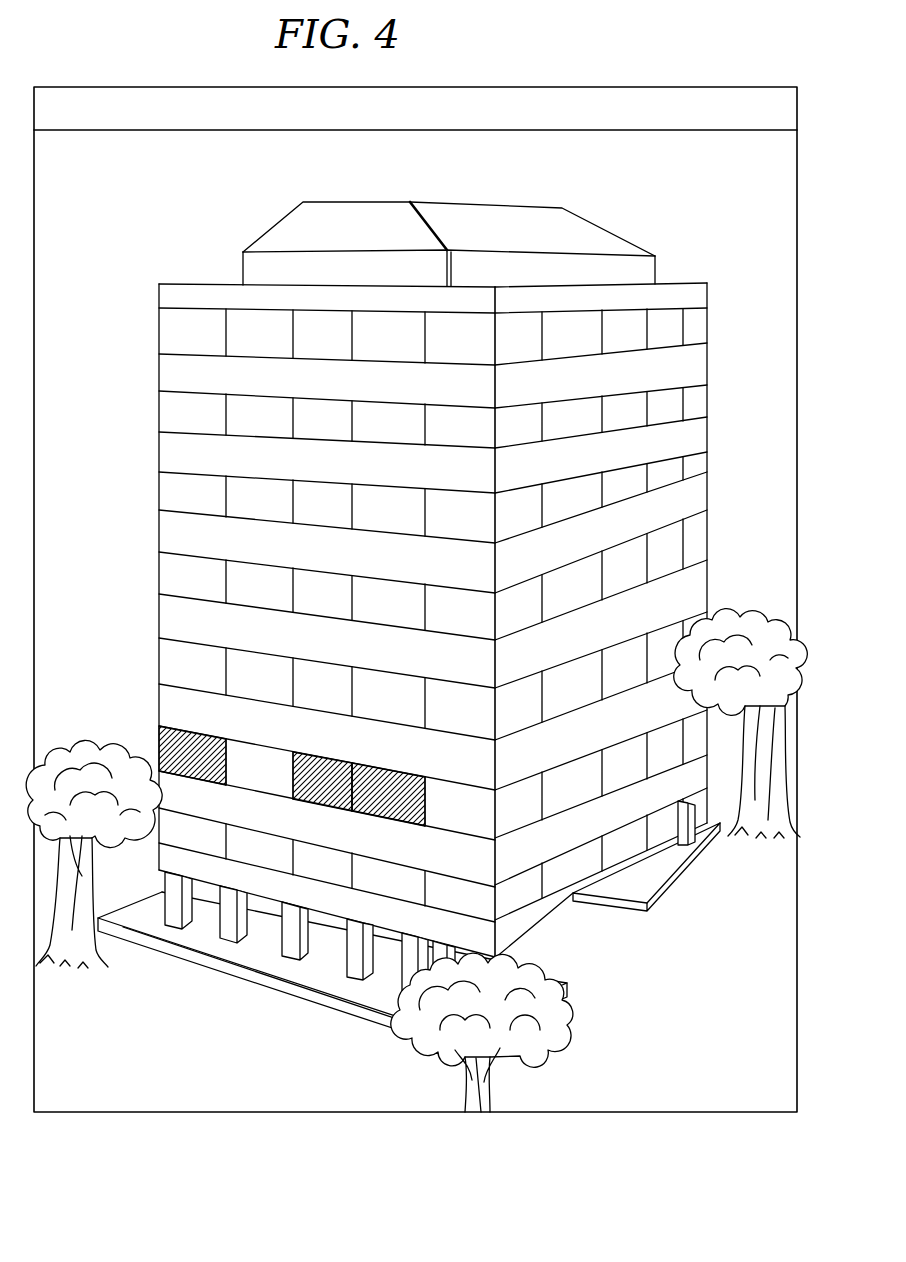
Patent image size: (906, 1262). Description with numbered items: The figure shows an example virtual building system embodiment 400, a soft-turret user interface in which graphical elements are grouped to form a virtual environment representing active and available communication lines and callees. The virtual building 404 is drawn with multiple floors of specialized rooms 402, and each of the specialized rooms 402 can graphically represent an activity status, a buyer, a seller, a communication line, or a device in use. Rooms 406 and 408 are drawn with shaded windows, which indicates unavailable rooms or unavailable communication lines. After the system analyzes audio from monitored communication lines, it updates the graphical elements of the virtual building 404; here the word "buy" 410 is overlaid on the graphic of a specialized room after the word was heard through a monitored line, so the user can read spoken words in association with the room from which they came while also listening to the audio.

The virtual building system embodiment 400 is at (530, 86).
The specialized rooms 402 is at (147, 765).
The virtual building 404 is at (489, 210).
The room 406 is at (308, 808).
The room 408 is at (386, 812).
The word "buy" 410 is at (593, 652).